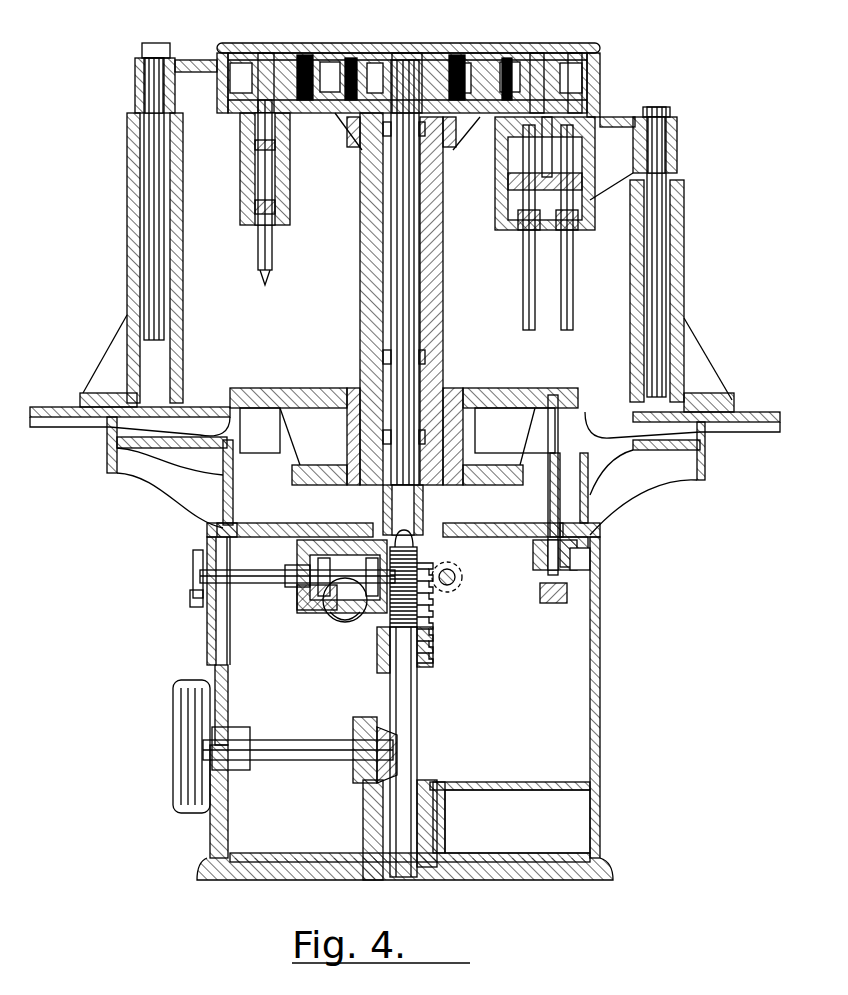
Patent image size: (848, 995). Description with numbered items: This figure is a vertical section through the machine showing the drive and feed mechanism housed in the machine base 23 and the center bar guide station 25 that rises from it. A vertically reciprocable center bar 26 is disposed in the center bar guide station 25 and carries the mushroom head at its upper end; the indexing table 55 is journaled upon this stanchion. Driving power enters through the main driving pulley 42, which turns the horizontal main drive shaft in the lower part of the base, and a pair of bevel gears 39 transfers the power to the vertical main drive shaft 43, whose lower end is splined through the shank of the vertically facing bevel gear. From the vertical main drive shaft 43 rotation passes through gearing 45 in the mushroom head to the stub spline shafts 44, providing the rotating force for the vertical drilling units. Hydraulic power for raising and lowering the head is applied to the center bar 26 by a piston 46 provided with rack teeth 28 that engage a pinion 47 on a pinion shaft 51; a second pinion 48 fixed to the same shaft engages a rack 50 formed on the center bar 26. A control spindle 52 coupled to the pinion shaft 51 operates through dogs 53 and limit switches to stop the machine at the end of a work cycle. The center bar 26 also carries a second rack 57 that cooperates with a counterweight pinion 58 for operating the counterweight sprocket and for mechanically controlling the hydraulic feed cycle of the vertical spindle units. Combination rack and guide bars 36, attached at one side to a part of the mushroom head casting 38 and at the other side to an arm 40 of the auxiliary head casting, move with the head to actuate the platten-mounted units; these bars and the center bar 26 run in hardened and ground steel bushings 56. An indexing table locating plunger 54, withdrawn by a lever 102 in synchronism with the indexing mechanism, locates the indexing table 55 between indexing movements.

The machine base 23 is at (600, 736).
The center bar guide station 25 is at (443, 272).
The center bar 26 is at (362, 297).
The rack teeth 28 is at (330, 612).
The rack and guide bars 36 is at (128, 246).
The part of the mushroom head casting 38 is at (228, 72).
The bevel gears 39 is at (418, 748).
The arm 40 is at (628, 118).
The main driving pulley 42 is at (185, 815).
The vertical main drive shaft 43 is at (413, 693).
The stub spline shafts 44 is at (270, 135).
The gearing 45 is at (342, 80).
The piston 46 is at (352, 620).
The pinion 47 is at (300, 552).
The second pinion 48 is at (420, 600).
The rack 50 is at (430, 618).
The pinion shaft 51 is at (305, 605).
The control spindle 52 is at (250, 578).
The dogs 53 is at (193, 608).
The indexing table locating plunger 54 is at (598, 512).
The indexing table 55 is at (528, 390).
The bushings 56 is at (175, 262).
The second rack 57 is at (432, 640).
The counterweight pinion 58 is at (460, 578).
The lever 102 is at (552, 604).